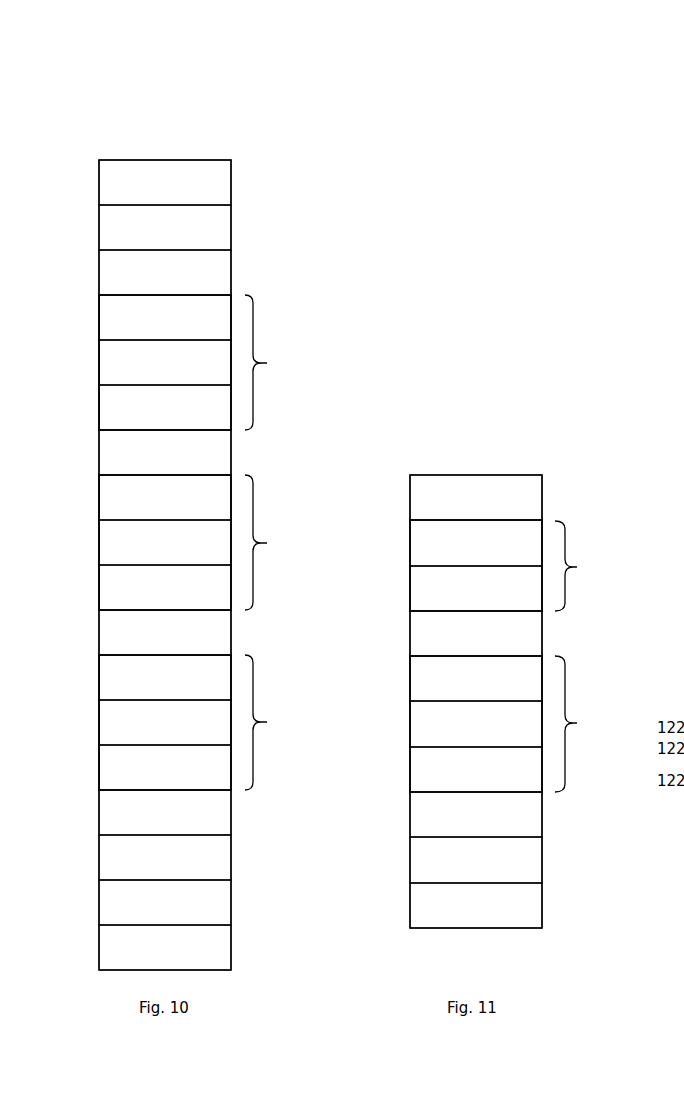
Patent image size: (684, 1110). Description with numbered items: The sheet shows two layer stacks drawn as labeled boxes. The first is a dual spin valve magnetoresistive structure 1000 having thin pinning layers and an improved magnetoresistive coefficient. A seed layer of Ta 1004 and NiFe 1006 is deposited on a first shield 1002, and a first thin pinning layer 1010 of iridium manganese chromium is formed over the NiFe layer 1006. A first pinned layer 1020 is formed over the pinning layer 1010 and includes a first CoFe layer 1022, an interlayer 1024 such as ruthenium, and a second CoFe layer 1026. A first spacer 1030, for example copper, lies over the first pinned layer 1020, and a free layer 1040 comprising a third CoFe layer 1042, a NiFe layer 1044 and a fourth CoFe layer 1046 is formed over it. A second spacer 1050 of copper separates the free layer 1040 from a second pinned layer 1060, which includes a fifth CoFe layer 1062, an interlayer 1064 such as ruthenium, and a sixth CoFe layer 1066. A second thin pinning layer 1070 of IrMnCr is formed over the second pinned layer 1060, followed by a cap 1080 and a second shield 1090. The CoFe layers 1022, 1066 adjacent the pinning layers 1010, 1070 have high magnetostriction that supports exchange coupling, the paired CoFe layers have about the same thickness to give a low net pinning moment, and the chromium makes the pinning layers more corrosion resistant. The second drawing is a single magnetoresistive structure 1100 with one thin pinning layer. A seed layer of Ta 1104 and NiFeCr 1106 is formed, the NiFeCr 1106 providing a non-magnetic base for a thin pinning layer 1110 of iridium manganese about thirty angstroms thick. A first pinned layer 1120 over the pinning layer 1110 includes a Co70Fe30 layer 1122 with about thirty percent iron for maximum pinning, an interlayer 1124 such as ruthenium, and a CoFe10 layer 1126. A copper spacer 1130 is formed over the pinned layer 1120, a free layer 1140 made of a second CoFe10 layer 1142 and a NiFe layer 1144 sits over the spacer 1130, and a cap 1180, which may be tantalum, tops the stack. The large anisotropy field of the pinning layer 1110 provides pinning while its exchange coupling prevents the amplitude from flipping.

In FIG. 10, the dual spin valve magnetoresistive structure 1000 is at (62, 167).
In FIG. 10, the first shield 1002 is at (106, 949).
In FIG. 10, the Ta seed layer 1004 is at (106, 910).
In FIG. 10, the NiFe layer 1006 is at (112, 864).
In FIG. 10, the first thin pinning layer 1010 is at (280, 834).
In FIG. 10, the first pinned layer 1020 is at (293, 668).
In FIG. 10, the first CoFe layer 1022 is at (110, 767).
In FIG. 10, the interlayer 1024 is at (110, 722).
In FIG. 10, the second CoFe layer 1026 is at (110, 677).
In FIG. 10, the first spacer 1030 is at (110, 632).
In FIG. 10, the free layer 1040 is at (296, 492).
In FIG. 10, the third CoFe layer 1042 is at (108, 577).
In FIG. 10, the NiFe layer 1044 is at (113, 542).
In FIG. 10, the fourth CoFe layer 1046 is at (110, 490).
In FIG. 10, the second spacer 1050 is at (118, 452).
In FIG. 10, the second pinned layer 1060 is at (305, 377).
In FIG. 10, the fifth CoFe layer 1062 is at (115, 407).
In FIG. 10, the interlayer 1064 is at (113, 362).
In FIG. 10, the sixth CoFe layer 1066 is at (112, 317).
In FIG. 10, the second thin pinning layer 1070 is at (309, 270).
In FIG. 10, the cap 1080 is at (222, 236).
In FIG. 10, the second shield 1090 is at (226, 183).
In FIG. 11, the single magnetoresistive structure 1100 is at (535, 425).
In FIG. 11, the Ta seed layer 1104 is at (432, 916).
In FIG. 11, the NiFeCr layer 1106 is at (530, 858).
In FIG. 11, the thin pinning layer 1110 is at (610, 823).
In FIG. 11, the first pinned layer 1120 is at (617, 668).
In FIG. 11, the Co70Fe30 layer 1122 is at (430, 776).
In FIG. 11, the interlayer 1124 is at (420, 715).
In FIG. 11, the CoFe10 layer 1126 is at (532, 669).
In FIG. 11, the spacer 1130 is at (421, 628).
In FIG. 11, the free layer 1140 is at (614, 522).
In FIG. 11, the second CoFe10 layer 1142 is at (421, 588).
In FIG. 11, the NiFe layer 1144 is at (431, 533).
In FIG. 11, the cap 1180 is at (530, 500).